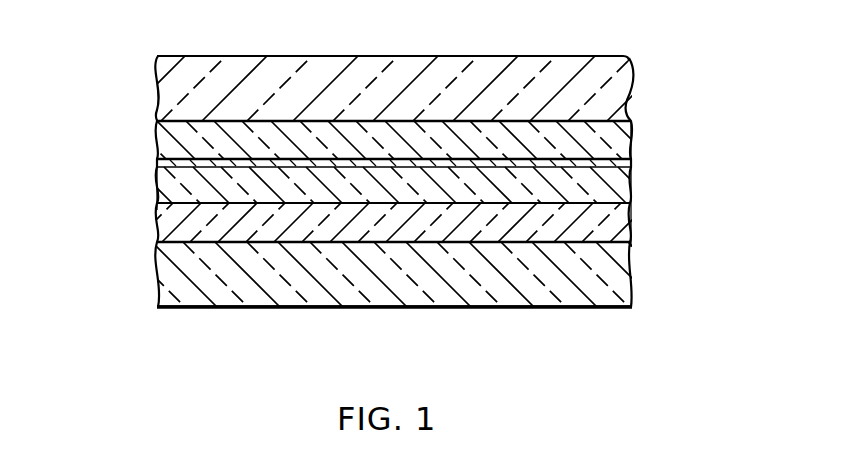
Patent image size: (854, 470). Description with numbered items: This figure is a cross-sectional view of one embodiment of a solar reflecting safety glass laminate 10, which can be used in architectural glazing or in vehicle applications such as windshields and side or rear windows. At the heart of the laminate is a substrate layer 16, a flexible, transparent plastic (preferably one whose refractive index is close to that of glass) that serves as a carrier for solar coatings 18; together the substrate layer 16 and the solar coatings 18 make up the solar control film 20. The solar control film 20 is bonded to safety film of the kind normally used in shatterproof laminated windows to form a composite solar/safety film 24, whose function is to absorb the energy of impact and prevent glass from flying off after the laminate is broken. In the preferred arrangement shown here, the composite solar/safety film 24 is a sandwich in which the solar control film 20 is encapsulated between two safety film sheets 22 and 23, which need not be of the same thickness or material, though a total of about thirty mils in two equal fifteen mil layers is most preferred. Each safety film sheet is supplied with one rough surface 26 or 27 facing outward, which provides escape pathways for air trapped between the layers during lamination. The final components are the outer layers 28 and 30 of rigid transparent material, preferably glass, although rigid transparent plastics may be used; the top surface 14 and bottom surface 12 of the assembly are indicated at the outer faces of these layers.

The solar reflecting safety glass laminate 10 is at (122, 300).
The bottom surface 12 is at (402, 309).
The top surface 14 is at (501, 56).
The substrate layer 16 is at (628, 192).
The solar coatings 18 is at (627, 164).
The solar control film 20 is at (155, 158).
The safety film sheet 22 is at (627, 237).
The safety film sheet 23 is at (627, 141).
The composite solar/safety film 24 is at (722, 120).
The rough surface 26 is at (630, 273).
The rough surface 27 is at (624, 119).
The glass layer 28 is at (622, 78).
The glass layer 30 is at (588, 310).